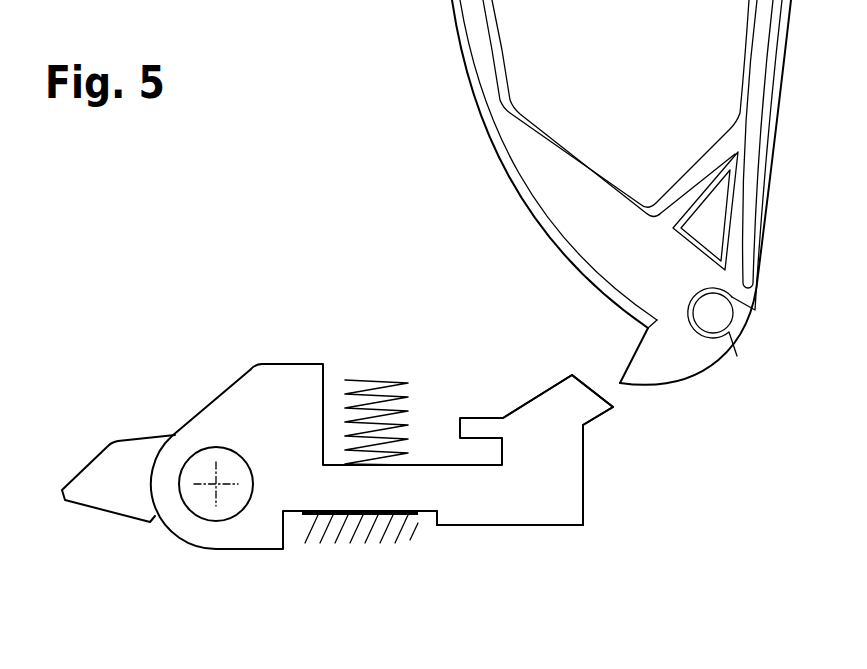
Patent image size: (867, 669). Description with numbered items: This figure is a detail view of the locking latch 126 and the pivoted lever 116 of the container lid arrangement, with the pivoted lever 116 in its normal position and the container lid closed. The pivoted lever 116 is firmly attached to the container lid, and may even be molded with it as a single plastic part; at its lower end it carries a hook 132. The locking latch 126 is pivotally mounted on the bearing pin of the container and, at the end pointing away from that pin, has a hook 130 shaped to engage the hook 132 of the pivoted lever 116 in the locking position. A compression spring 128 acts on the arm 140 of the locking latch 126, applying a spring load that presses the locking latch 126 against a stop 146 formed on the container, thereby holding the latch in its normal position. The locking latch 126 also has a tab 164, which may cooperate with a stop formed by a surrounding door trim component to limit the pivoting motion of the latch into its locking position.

The pivoted lever 116 is at (497, 112).
The locking latch 126 is at (570, 492).
The compression spring 128 is at (378, 392).
The hook 130 is at (600, 417).
The hook 132 is at (627, 353).
The arm 140 is at (450, 488).
The stop 146 is at (362, 517).
The tab 164 is at (102, 510).